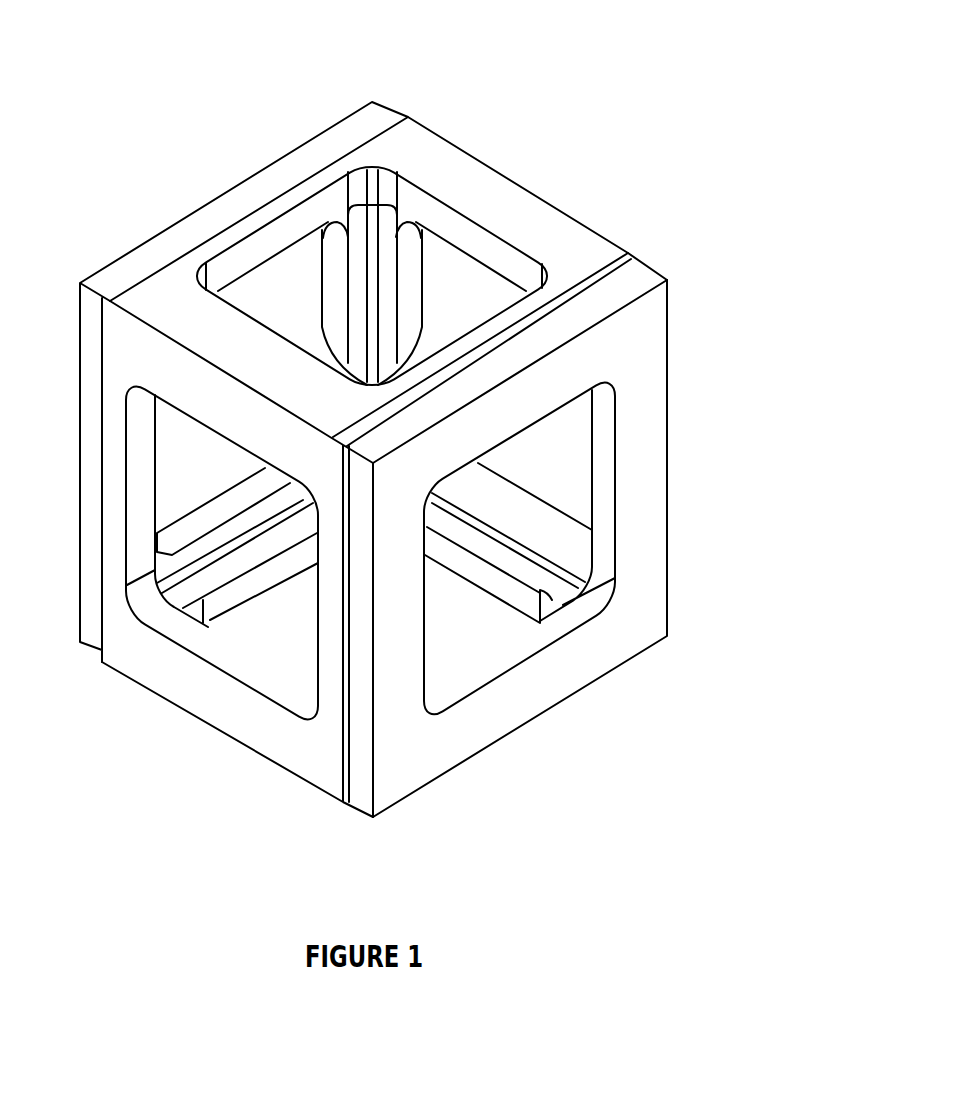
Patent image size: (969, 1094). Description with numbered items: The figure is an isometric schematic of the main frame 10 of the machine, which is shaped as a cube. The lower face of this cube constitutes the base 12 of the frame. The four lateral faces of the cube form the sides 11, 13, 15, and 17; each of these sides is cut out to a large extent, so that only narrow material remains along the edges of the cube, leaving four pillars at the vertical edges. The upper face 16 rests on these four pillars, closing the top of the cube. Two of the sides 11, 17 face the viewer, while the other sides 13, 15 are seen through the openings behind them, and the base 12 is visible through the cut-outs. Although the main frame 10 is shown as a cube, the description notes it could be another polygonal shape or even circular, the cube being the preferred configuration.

The main frame 10 is at (652, 82).
The side 11 is at (323, 752).
The base 12 is at (563, 590).
The side 13 is at (358, 297).
The side 15 is at (390, 258).
The upper face 16 is at (572, 260).
The side 17 is at (640, 542).